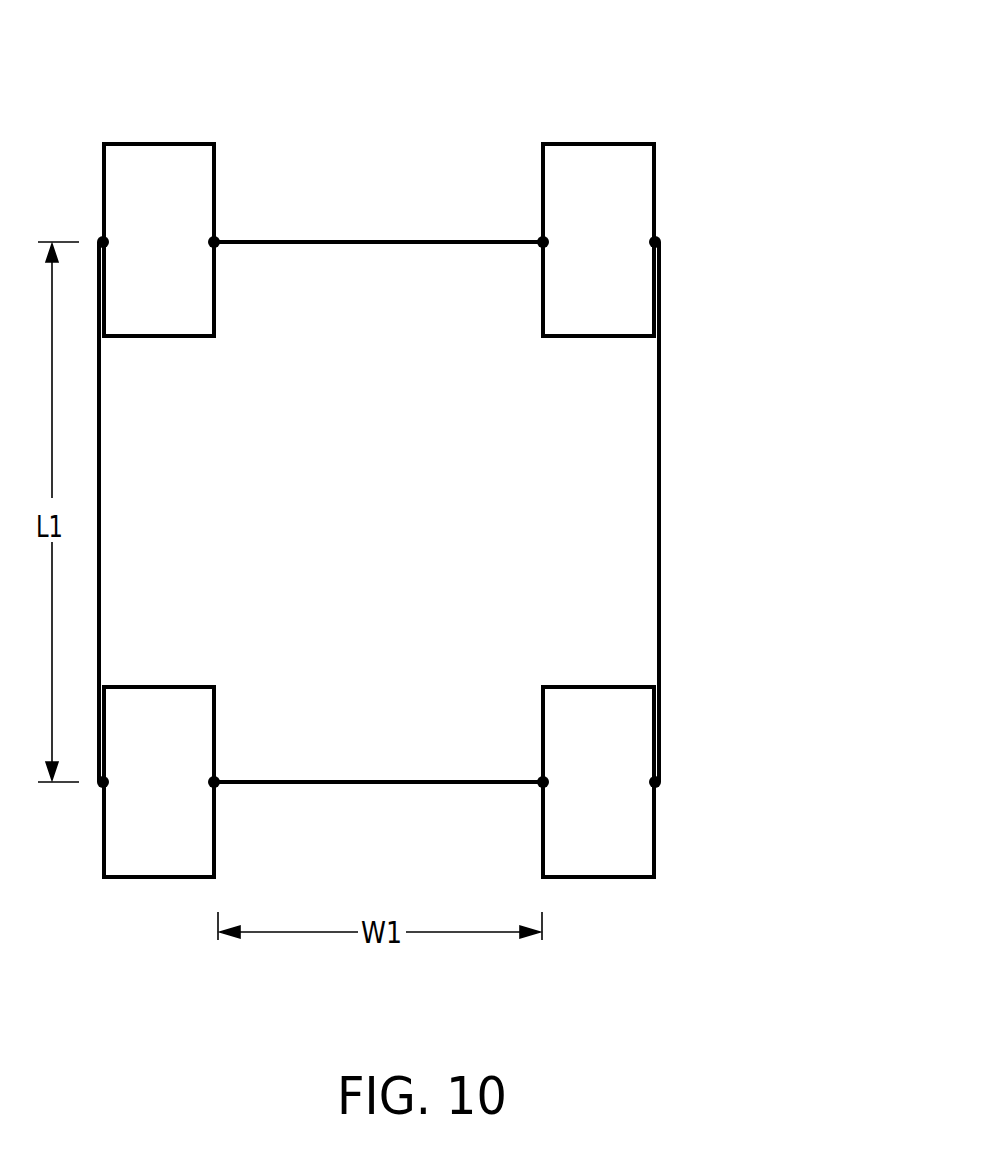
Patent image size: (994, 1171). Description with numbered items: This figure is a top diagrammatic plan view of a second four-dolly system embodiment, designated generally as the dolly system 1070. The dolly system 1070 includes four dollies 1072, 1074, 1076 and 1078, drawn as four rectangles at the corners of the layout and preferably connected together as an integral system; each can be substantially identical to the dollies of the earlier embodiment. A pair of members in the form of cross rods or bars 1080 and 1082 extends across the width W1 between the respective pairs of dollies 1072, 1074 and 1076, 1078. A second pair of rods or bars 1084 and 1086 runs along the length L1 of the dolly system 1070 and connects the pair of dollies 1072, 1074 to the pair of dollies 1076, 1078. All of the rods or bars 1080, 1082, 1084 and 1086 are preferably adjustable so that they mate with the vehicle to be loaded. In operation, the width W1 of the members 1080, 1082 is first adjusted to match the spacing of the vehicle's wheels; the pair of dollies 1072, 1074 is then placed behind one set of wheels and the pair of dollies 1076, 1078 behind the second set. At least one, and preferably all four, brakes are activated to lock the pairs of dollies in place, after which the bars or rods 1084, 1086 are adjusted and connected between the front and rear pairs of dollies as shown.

The dolly system 1070 is at (492, 480).
The dolly 1072 is at (145, 142).
The dolly 1074 is at (574, 142).
The dolly 1076 is at (146, 685).
The dolly 1078 is at (575, 685).
The cross rod or bar 1080 is at (393, 246).
The cross rod or bar 1082 is at (393, 786).
The rod or bar 1084 is at (102, 505).
The rod or bar 1086 is at (656, 497).